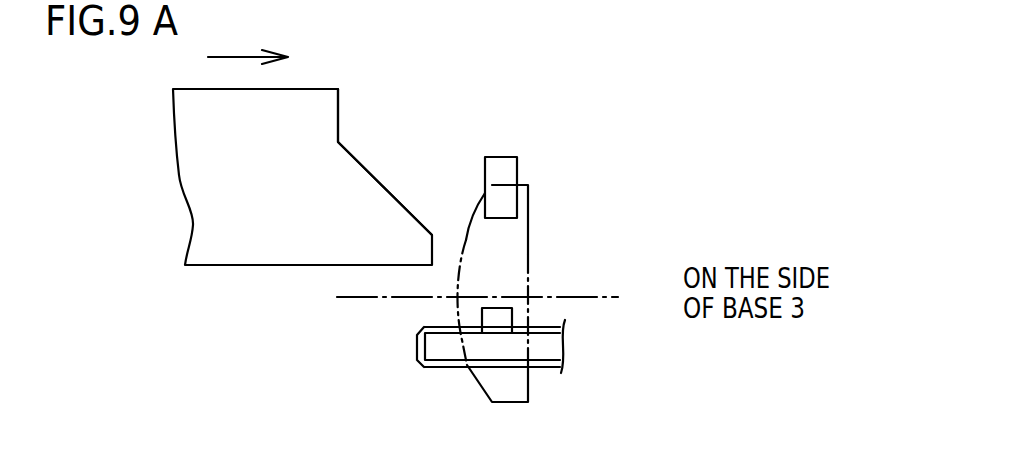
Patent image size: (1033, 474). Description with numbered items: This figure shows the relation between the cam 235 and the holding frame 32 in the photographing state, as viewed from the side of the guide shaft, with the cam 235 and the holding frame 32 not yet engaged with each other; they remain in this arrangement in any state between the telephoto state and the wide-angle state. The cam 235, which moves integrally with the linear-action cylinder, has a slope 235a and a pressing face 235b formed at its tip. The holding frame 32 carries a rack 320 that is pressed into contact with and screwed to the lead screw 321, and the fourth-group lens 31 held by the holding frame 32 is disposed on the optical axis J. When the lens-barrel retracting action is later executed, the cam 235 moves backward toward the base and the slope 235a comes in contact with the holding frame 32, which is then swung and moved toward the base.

The cam 235 is at (235, 265).
The slope 235a is at (372, 173).
The pressing face 235b is at (338, 104).
The holding frame 32 is at (507, 155).
The fourth-group lens 31 is at (530, 255).
The rack 320 is at (488, 318).
The lead screw 321 is at (547, 367).
The optical axis J is at (585, 297).